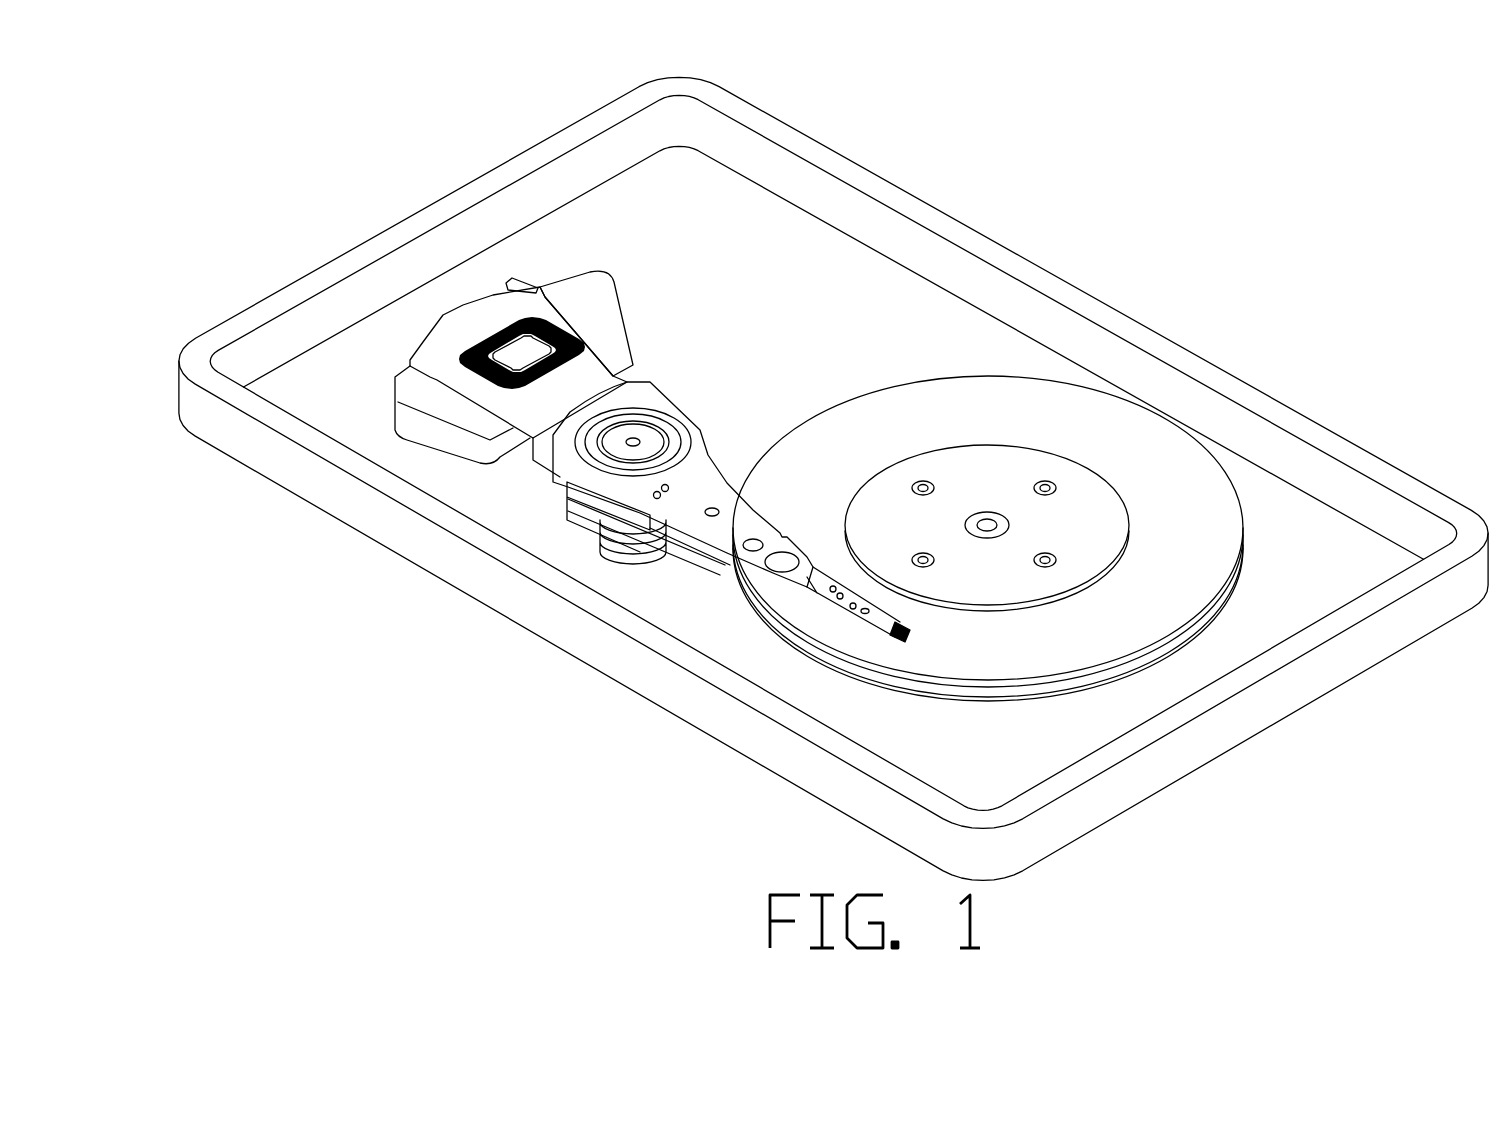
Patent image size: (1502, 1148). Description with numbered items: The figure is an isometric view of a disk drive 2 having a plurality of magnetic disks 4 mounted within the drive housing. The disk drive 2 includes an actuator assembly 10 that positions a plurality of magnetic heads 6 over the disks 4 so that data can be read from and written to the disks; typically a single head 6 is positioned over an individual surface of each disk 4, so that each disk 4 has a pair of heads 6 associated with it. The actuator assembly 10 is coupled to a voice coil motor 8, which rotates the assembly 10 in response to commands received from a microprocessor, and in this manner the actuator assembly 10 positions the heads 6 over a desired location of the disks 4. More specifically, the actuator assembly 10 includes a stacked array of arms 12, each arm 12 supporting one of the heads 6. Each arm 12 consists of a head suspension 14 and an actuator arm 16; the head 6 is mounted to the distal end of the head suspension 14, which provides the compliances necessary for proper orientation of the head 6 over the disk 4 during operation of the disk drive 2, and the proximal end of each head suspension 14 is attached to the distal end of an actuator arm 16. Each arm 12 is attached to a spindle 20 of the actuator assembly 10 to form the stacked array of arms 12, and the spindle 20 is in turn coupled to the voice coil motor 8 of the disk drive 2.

The disk drive 2 is at (301, 836).
The magnetic disks 4 is at (1153, 663).
The magnetic heads 6 is at (897, 640).
The voice coil motor 8 is at (437, 360).
The actuator assembly 10 is at (755, 404).
The arms 12 is at (723, 560).
The head suspension 14 is at (815, 577).
The actuator arm 16 is at (747, 560).
The spindle 20 is at (575, 435).